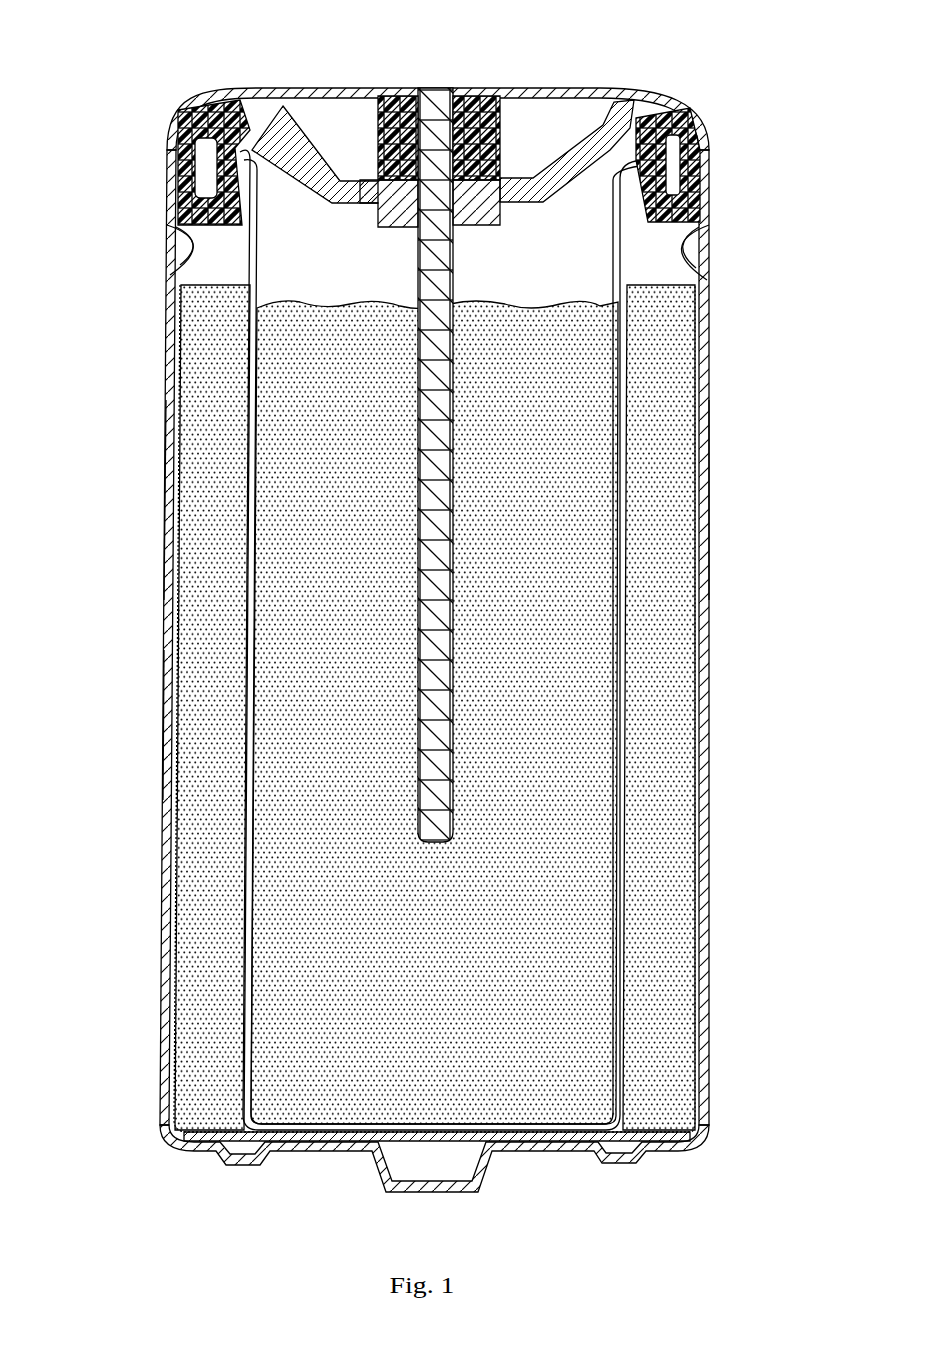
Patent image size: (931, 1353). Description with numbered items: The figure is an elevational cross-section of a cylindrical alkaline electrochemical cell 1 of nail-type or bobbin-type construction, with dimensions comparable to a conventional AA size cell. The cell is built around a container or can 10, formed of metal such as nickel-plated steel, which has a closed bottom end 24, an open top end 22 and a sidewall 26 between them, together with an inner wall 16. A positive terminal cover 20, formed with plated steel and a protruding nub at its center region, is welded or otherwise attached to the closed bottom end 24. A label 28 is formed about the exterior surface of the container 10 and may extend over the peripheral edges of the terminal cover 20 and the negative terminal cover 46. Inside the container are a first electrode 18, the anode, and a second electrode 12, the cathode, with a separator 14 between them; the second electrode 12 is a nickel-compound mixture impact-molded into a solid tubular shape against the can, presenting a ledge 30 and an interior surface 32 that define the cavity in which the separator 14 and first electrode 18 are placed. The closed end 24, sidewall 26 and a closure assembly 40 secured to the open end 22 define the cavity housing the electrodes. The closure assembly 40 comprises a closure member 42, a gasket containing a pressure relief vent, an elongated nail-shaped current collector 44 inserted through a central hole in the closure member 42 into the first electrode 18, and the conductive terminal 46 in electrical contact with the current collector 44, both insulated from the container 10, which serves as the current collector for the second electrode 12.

The electrochemical cell 1 is at (707, 518).
The container 10 is at (709, 398).
The second electrode 12 is at (655, 835).
The separator 14 is at (627, 930).
The inner wall 16 is at (680, 271).
The first electrode 18 is at (520, 742).
The terminal cover 20 is at (520, 1160).
The top end 22 is at (645, 108).
The closed bottom end 24 is at (345, 1145).
The sidewall 26 is at (168, 738).
The label 28 is at (164, 500).
The ledge 30 is at (215, 252).
The interior surface 32 is at (625, 686).
The closure assembly 40 is at (552, 136).
The closure member 42 is at (300, 154).
The current collector 44 is at (440, 656).
The conductive terminal 46 is at (457, 88).